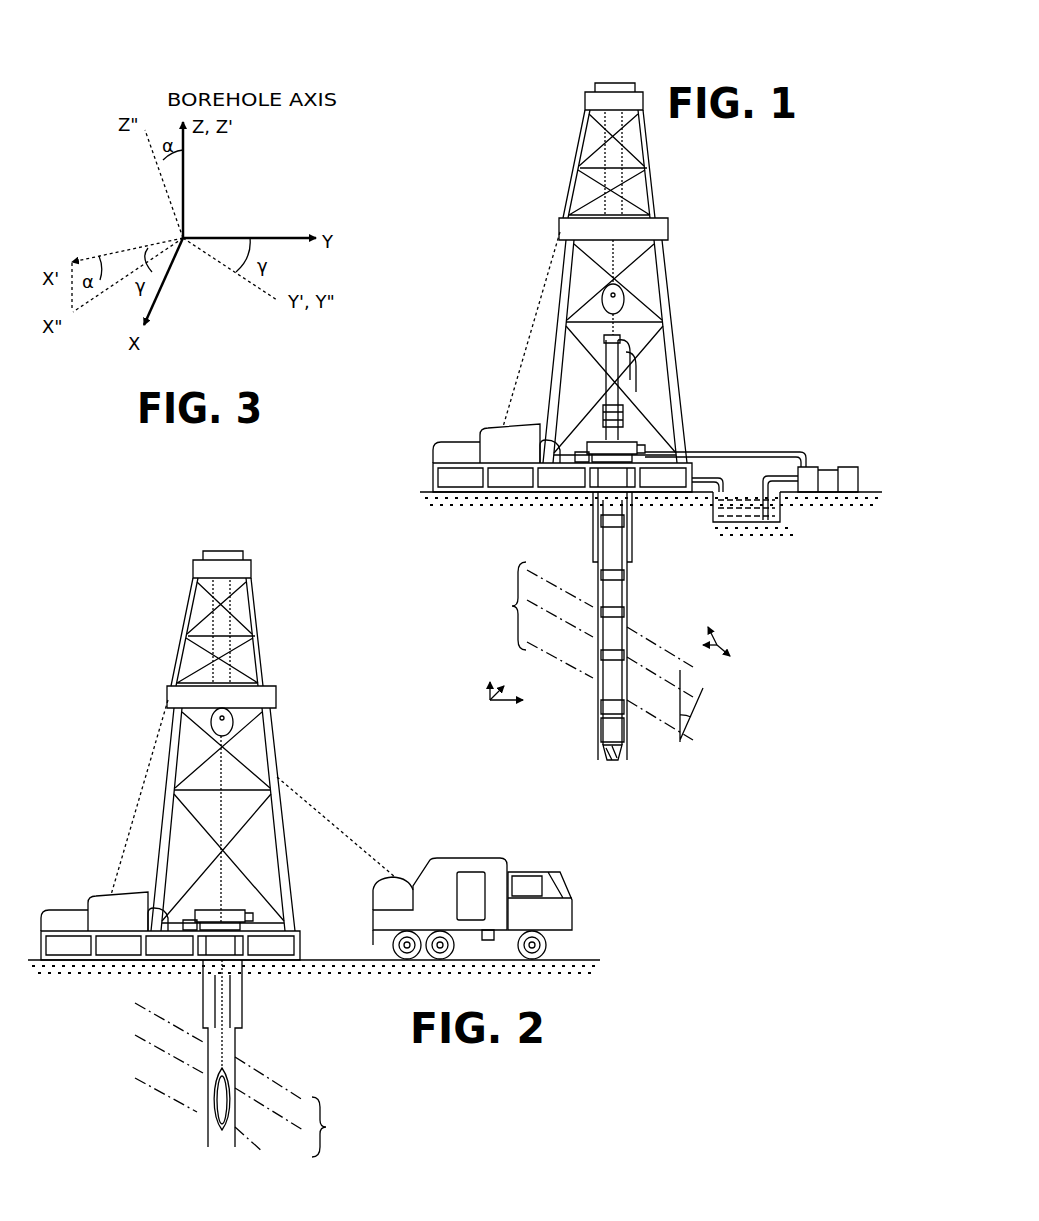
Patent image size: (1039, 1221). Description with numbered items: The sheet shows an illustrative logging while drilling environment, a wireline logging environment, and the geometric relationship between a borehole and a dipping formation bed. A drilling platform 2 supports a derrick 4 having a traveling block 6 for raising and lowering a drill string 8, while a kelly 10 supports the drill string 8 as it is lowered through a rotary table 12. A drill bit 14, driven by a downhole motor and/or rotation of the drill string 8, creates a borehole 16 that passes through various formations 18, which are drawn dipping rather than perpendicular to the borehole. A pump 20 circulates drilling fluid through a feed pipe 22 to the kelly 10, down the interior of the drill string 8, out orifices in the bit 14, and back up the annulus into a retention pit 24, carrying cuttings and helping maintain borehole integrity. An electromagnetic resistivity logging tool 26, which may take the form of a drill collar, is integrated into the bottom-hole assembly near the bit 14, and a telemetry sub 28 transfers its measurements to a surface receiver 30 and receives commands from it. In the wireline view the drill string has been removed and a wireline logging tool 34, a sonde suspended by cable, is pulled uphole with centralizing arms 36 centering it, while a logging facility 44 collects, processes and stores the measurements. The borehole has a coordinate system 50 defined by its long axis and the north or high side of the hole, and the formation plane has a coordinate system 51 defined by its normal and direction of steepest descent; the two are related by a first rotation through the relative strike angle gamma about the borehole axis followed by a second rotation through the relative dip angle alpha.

In FIG. 1, the drilling platform 2 is at (432, 468).
In FIG. 2, the drilling platform 2 is at (304, 940).
In FIG. 1, the derrick 4 is at (654, 196).
In FIG. 2, the derrick 4 is at (290, 910).
In FIG. 1, the traveling block 6 is at (625, 300).
In FIG. 2, the traveling block 6 is at (233, 722).
In FIG. 1, the drill string 8 is at (615, 600).
In FIG. 1, the kelly 10 is at (618, 350).
In FIG. 1, the rotary table 12 is at (628, 440).
In FIG. 2, the rotary table 12 is at (238, 912).
In FIG. 1, the drill bit 14 is at (622, 752).
In FIG. 1, the borehole 16 is at (628, 605).
In FIG. 1, the formations 18 is at (590, 652).
In FIG. 2, the formations 18 is at (246, 1080).
In FIG. 1, the pump 20 is at (810, 468).
In FIG. 1, the feed pipe 22 is at (760, 458).
In FIG. 1, the retention pit 24 is at (720, 524).
In FIG. 1, the electromagnetic resistivity logging tool 26 is at (604, 730).
In FIG. 1, the telemetry sub 28 is at (604, 710).
In FIG. 1, the surface receiver 30 is at (620, 410).
In FIG. 2, the wireline logging tool 34 is at (216, 1097).
In FIG. 2, the centralizing arms 36 is at (209, 1115).
In FIG. 2, the logging facility 44 is at (435, 860).
In FIG. 1, the borehole coordinate system 50 is at (487, 701).
In FIG. 1, the formation coordinate system 51 is at (734, 628).